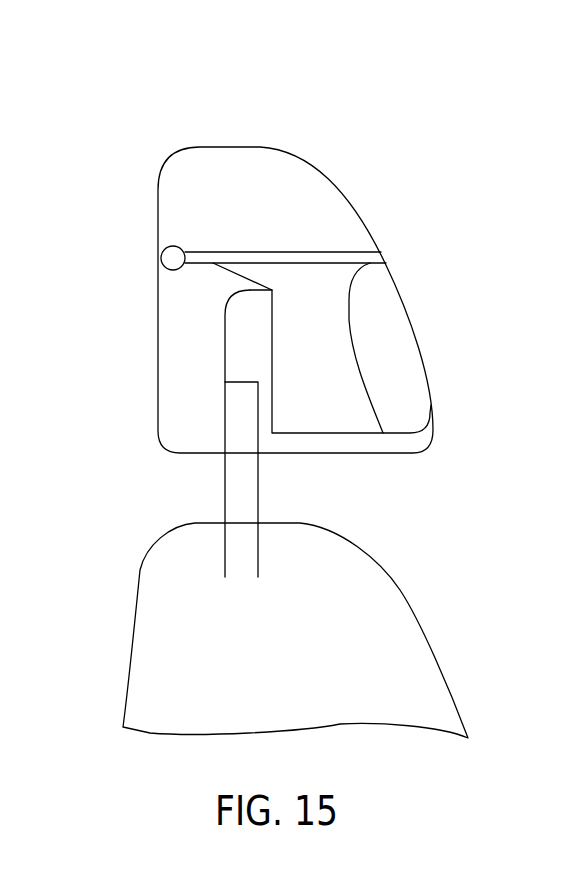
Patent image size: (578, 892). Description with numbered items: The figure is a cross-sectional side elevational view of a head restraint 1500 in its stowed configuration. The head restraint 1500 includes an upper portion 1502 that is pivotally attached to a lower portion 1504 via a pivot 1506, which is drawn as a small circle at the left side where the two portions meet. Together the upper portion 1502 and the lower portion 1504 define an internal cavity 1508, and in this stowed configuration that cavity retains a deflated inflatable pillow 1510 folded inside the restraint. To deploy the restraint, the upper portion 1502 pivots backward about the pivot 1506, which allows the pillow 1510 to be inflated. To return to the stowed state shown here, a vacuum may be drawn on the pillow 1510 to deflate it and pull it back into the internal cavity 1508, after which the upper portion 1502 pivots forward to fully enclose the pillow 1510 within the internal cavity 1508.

The head restraint 1500 is at (382, 170).
The upper portion 1502 is at (273, 168).
The lower portion 1504 is at (182, 387).
The pivot 1506 is at (172, 255).
The internal cavity 1508 is at (373, 398).
The inflatable pillow 1510 is at (342, 355).